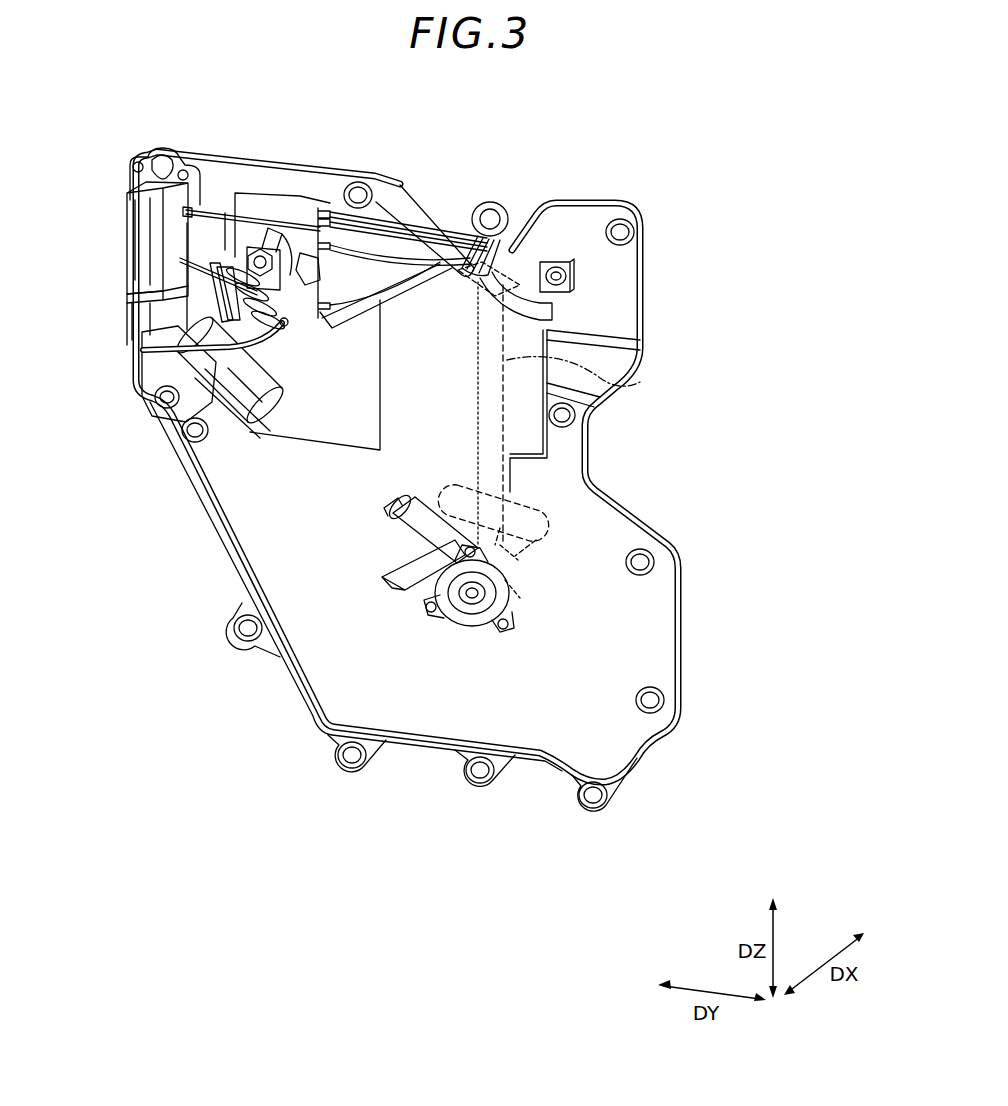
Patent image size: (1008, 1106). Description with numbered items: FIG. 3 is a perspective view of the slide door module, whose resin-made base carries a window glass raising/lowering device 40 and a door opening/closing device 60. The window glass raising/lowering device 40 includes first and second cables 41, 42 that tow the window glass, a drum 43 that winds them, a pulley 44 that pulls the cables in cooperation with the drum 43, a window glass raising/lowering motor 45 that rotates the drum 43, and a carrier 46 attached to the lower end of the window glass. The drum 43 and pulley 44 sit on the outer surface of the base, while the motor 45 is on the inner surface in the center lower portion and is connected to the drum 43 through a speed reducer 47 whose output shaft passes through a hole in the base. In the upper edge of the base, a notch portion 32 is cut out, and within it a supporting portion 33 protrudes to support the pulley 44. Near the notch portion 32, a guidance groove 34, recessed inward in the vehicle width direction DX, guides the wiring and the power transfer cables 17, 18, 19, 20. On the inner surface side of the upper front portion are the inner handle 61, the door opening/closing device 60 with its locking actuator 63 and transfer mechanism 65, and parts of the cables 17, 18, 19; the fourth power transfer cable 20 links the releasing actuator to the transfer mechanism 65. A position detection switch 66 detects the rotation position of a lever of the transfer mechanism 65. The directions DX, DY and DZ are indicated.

The power transfer cable 17 is at (410, 226).
The power transfer cable 18 is at (443, 243).
The power transfer cable 19 is at (352, 249).
The fourth power transfer cable 20 is at (405, 290).
The notch portion 32 is at (394, 188).
The supporting portion 33 is at (477, 201).
The guidance groove 34 is at (548, 312).
The window glass raising/lowering device 40 is at (577, 533).
The first cable 41 is at (626, 374).
The second cable 42 is at (512, 550).
The drum 43 is at (512, 588).
The pulley 44 is at (510, 201).
The window glass raising/lowering motor 45 is at (395, 544).
The carrier 46 is at (455, 486).
The speed reducer 47 is at (465, 620).
The door opening/closing device 60 is at (125, 236).
The inner handle 61 is at (130, 280).
The locking actuator 63 is at (170, 420).
The transfer mechanism 65 is at (296, 332).
The position detection switch 66 is at (314, 278).